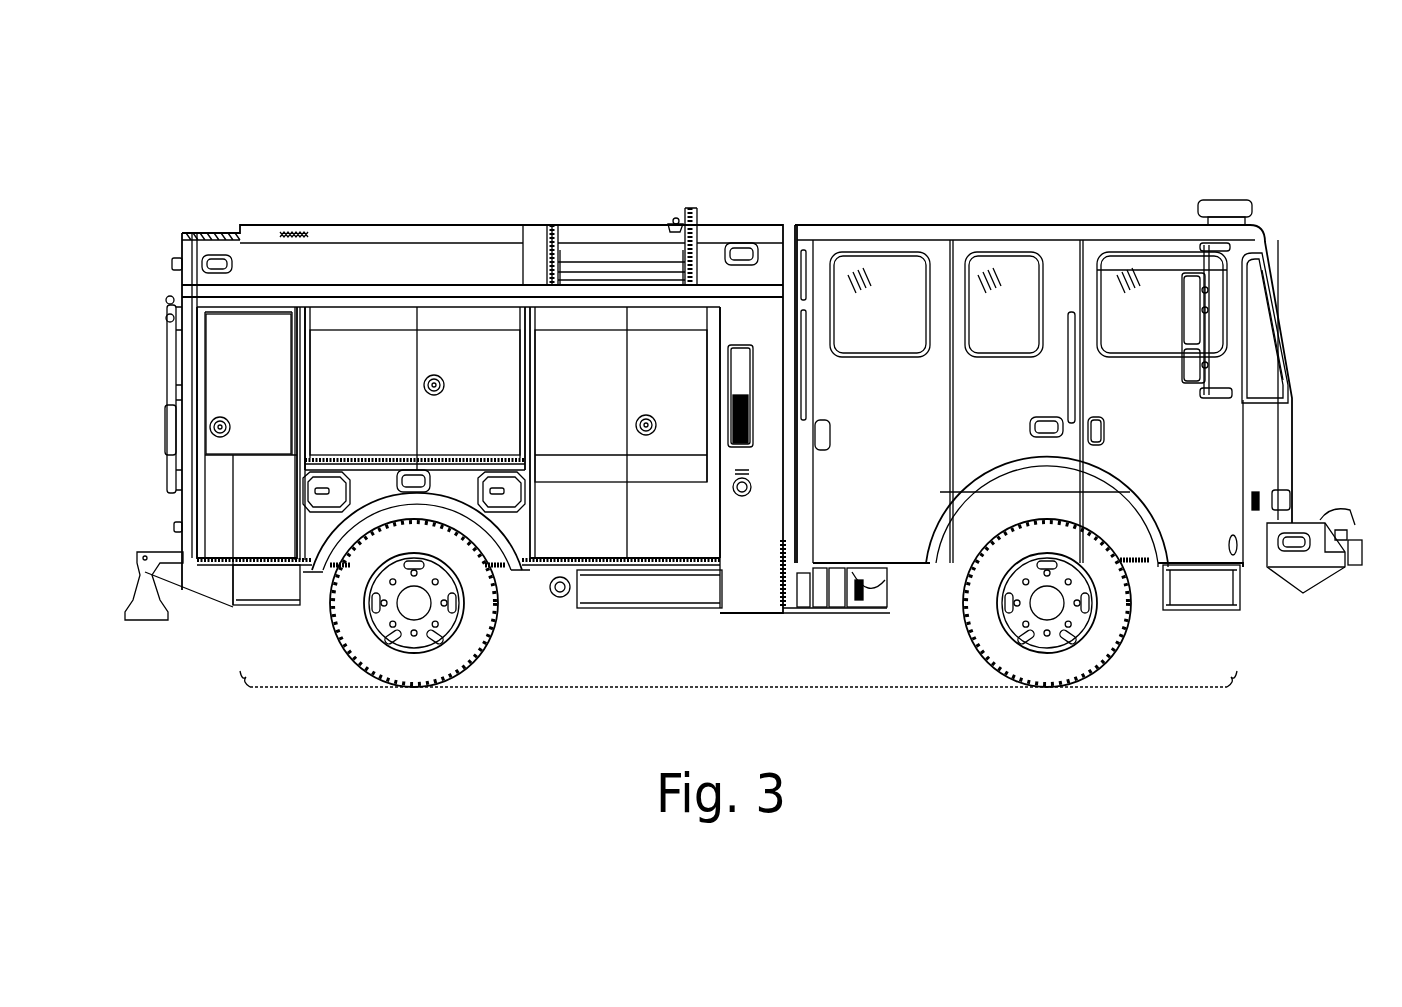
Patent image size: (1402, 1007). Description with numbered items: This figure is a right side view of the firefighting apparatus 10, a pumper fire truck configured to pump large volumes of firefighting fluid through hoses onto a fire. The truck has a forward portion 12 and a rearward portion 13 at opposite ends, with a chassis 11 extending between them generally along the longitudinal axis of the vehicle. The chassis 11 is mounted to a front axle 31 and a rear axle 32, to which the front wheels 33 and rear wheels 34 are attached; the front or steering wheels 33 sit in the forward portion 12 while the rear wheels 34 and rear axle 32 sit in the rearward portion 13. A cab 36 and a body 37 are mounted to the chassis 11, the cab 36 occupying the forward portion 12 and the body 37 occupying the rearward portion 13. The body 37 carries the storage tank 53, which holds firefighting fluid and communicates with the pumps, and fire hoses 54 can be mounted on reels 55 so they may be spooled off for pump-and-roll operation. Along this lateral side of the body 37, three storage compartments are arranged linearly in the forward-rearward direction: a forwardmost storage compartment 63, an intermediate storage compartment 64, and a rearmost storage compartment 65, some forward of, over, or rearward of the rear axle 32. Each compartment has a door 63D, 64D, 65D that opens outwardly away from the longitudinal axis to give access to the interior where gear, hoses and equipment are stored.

The firefighting apparatus 10 is at (1188, 150).
The chassis 11 is at (997, 513).
The forward portion 12 is at (1308, 362).
The rearward portion 13 is at (147, 408).
The front axle 31 is at (1053, 610).
The rear axle 32 is at (412, 612).
The front wheels 33 is at (1102, 647).
The rear wheels 34 is at (468, 641).
The cab 36 is at (1088, 277).
The body 37 is at (532, 228).
The storage tank 53 is at (668, 328).
The fire hoses 54 is at (675, 222).
The reels 55 is at (620, 243).
The forwardmost storage compartment 63 is at (597, 308).
The door 63D is at (681, 548).
The intermediate storage compartment 64 is at (350, 313).
The door 64D is at (448, 310).
The rearmost storage compartment 65 is at (245, 323).
The door 65D is at (247, 535).